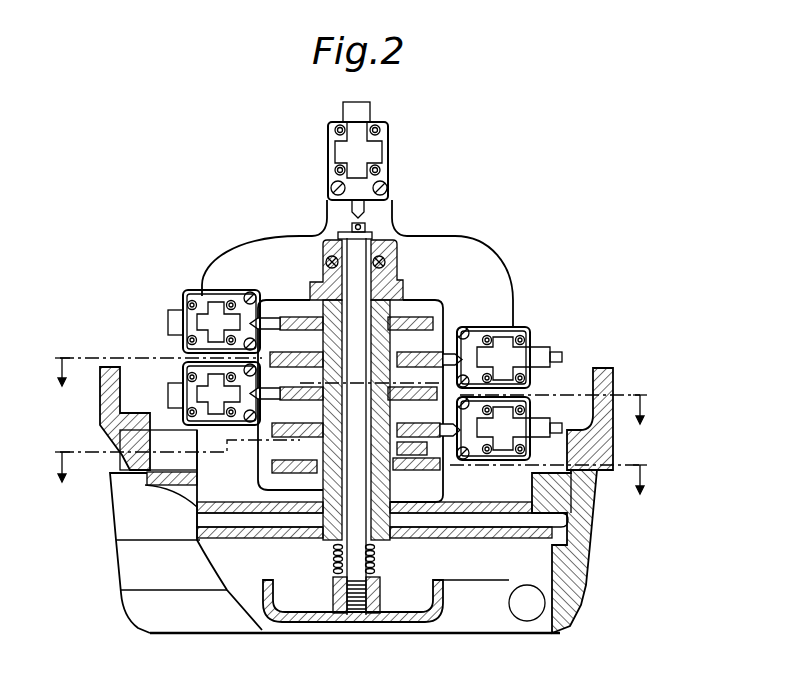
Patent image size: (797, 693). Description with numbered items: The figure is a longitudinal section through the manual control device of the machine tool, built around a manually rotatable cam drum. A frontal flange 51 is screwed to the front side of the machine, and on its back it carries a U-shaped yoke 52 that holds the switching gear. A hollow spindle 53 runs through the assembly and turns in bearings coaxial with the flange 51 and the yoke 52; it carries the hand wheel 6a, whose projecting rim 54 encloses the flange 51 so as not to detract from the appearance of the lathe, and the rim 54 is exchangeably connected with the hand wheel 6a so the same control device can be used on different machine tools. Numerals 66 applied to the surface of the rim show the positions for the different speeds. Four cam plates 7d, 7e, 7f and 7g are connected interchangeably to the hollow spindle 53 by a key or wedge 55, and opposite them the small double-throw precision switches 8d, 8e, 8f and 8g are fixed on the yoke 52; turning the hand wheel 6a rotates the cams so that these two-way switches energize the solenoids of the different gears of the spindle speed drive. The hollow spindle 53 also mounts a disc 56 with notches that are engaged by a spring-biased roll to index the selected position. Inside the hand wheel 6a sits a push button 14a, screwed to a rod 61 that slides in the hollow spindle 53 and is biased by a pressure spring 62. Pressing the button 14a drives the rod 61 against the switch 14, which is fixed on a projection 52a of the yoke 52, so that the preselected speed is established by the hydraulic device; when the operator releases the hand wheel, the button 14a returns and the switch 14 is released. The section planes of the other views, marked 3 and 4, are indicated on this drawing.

The switch 14 is at (372, 152).
The projection of the yoke 52a is at (335, 219).
The U-shaped yoke 52 is at (478, 270).
The hollow spindle 53 is at (380, 323).
The key or wedge 55 is at (388, 328).
The cam plate 7g is at (292, 318).
The cam plate 7f is at (487, 318).
The cam plate 7e is at (280, 405).
The cam plate 7d is at (528, 396).
The double-throw precision switch 8g is at (193, 320).
The double-throw precision switch 8f is at (526, 356).
The double-throw precision switch 8e is at (197, 398).
The double-throw precision switch 8d is at (514, 427).
The disc 56 is at (262, 477).
The frontal flange 51 is at (581, 510).
The projecting rim 54 is at (562, 601).
The numerals 66 is at (130, 580).
The hand wheel 6a is at (560, 625).
The push button 14a is at (395, 612).
The pressure spring 62 is at (340, 573).
The rod 61 is at (352, 500).
The section line 4- 4 is at (349, 392).
The section line 3- 3 is at (349, 471).